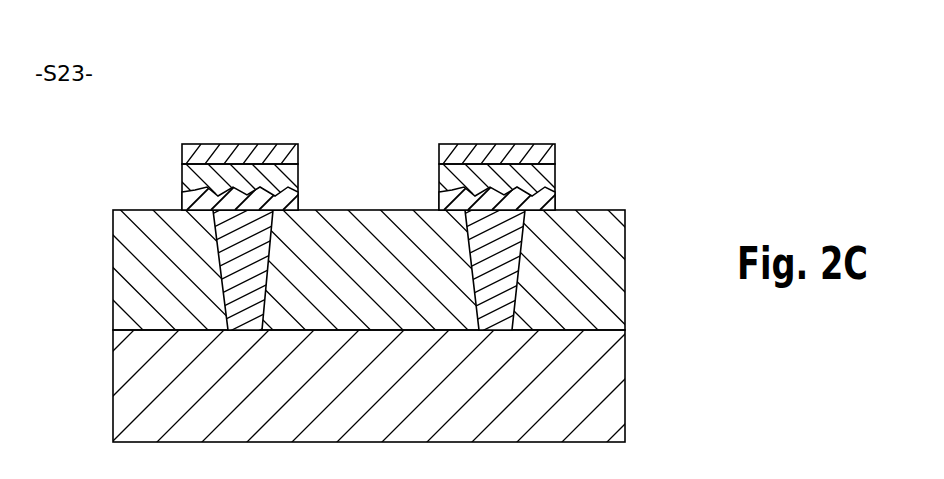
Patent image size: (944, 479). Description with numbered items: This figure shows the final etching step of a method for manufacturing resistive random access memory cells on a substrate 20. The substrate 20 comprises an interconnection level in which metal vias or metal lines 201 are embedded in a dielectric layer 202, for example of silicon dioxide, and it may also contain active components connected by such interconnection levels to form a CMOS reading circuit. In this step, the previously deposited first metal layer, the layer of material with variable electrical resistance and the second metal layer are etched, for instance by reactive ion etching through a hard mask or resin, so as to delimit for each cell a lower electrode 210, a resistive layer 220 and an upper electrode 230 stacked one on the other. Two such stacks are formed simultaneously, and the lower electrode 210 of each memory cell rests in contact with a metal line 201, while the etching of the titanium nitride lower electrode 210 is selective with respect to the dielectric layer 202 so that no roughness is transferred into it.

The substrate 20 is at (375, 313).
The metal line 201 is at (498, 302).
The dielectric layer 202 is at (580, 255).
The lower electrode 210 is at (197, 203).
The resistive layer 220 is at (197, 176).
The upper electrode 230 is at (200, 145).